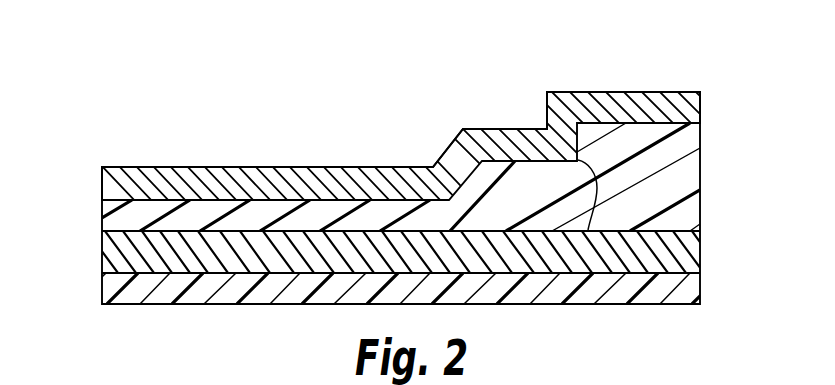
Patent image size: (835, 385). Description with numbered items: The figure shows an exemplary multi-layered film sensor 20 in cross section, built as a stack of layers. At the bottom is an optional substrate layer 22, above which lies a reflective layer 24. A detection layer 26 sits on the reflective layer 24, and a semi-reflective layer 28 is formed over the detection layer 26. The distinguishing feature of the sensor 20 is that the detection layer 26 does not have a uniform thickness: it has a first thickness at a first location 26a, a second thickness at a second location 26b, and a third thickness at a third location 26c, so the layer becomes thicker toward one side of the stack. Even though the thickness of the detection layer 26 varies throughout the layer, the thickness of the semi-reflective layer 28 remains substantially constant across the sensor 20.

The sensor 20 is at (300, 78).
The substrate layer 22 is at (700, 297).
The reflective layer 24 is at (700, 252).
The detection layer 26 is at (520, 165).
The first location 26a is at (97, 200).
The second location 26b is at (600, 195).
The third location 26c is at (700, 122).
The semi-reflective layer 28 is at (700, 101).